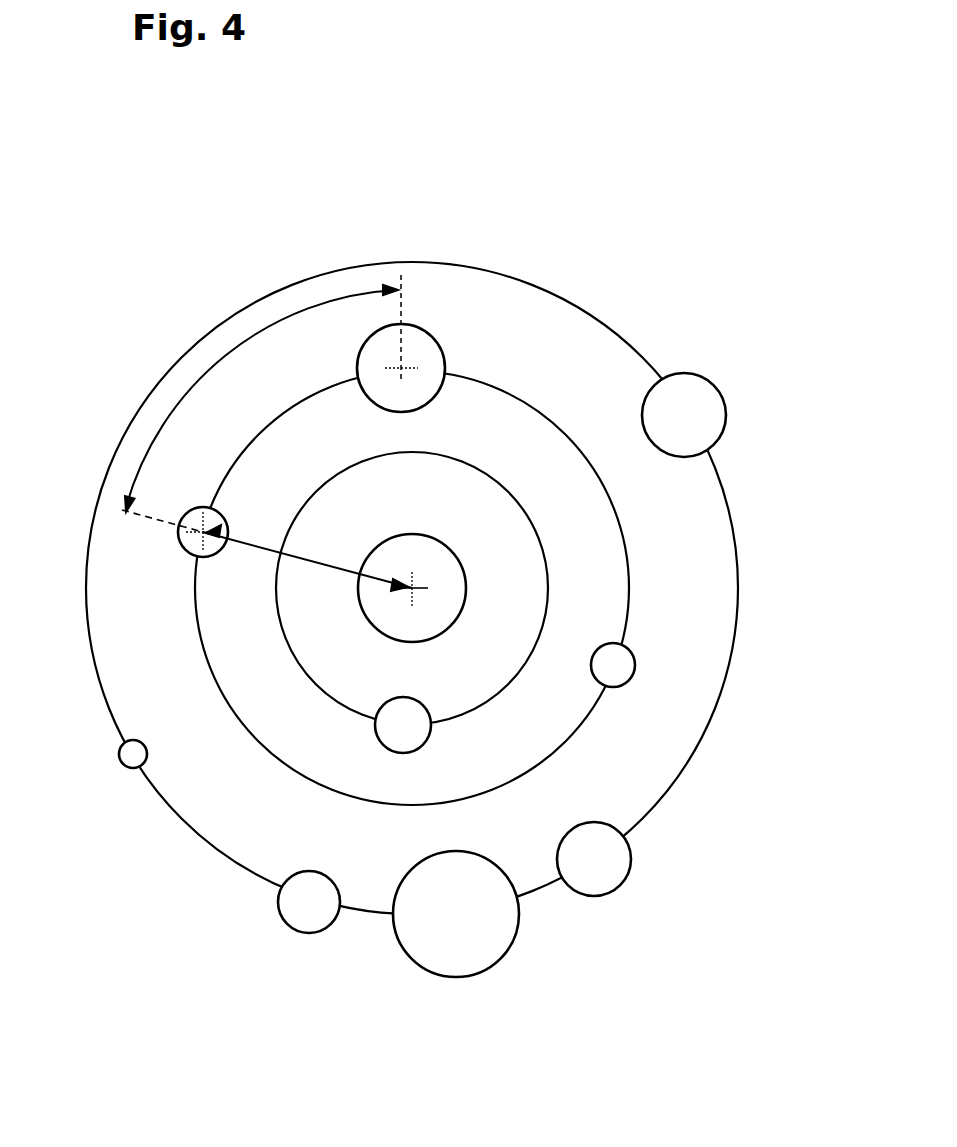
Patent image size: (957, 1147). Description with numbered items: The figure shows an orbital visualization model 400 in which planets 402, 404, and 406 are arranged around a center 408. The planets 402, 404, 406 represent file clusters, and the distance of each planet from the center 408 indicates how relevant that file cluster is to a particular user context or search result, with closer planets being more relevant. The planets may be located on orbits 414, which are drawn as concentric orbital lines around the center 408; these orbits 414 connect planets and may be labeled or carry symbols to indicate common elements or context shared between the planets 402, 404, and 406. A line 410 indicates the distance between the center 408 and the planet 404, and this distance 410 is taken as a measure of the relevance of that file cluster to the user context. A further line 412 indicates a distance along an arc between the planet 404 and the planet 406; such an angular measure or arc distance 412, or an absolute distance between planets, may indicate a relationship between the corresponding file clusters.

The orbital visualization model 400 is at (412, 558).
The planet 402 is at (455, 546).
The planet 404 is at (203, 507).
The planet 406 is at (433, 333).
The center 408 is at (413, 590).
The line 410 is at (263, 547).
The line 412 is at (209, 367).
The orbits 414 is at (596, 322).